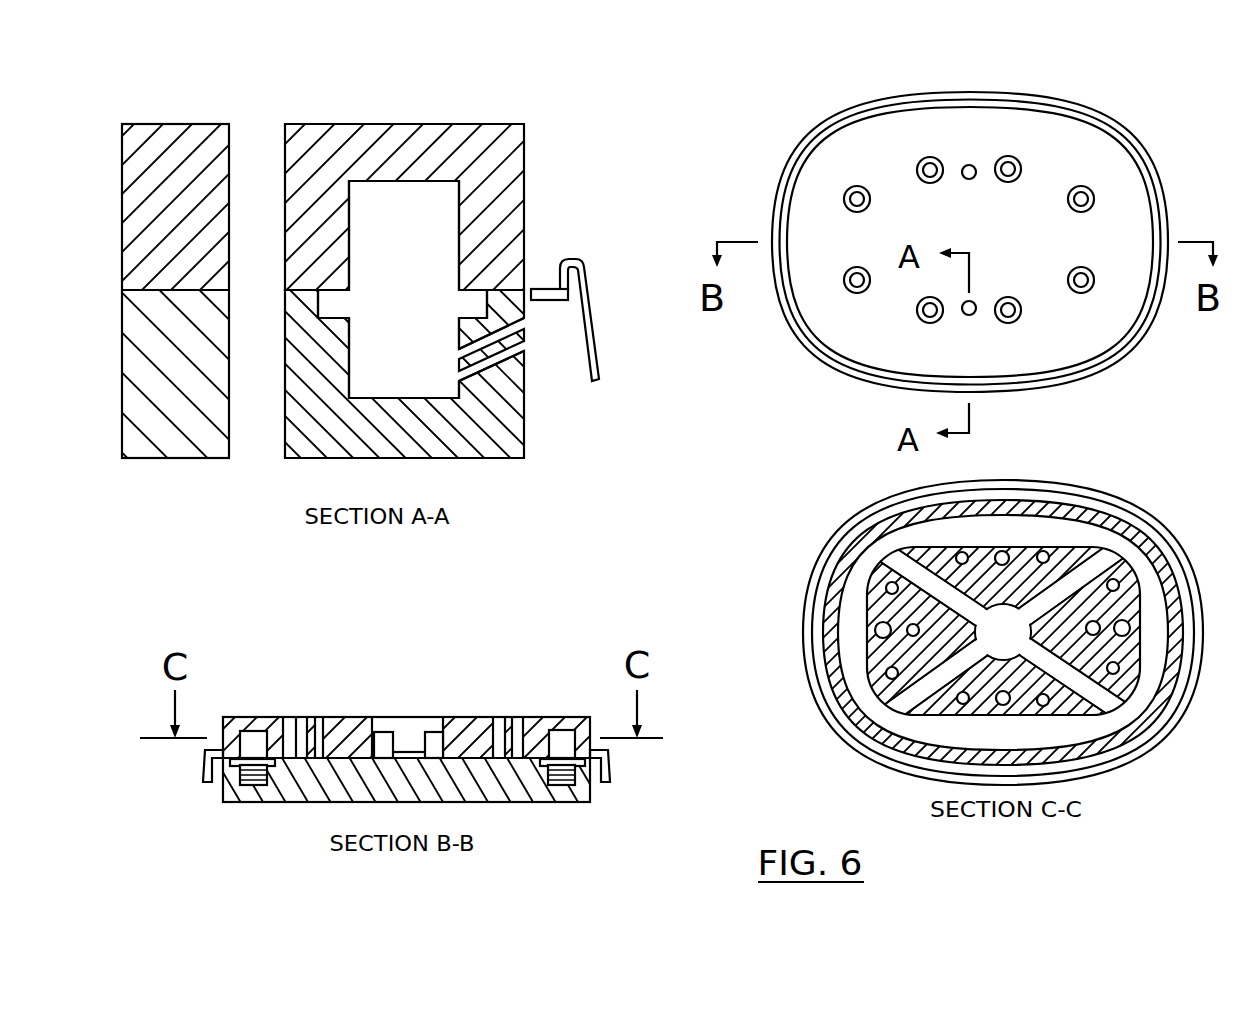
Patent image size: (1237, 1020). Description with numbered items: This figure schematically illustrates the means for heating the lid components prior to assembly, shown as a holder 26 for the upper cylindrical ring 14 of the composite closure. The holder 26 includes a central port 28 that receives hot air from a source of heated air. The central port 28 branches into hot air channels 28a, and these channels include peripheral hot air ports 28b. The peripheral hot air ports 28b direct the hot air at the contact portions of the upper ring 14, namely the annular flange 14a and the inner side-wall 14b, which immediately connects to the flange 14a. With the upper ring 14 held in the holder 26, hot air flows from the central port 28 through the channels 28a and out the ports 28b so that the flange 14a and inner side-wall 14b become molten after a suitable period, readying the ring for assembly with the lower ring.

The upper cylindrical ring 14 is at (688, 767).
The flange 14a is at (545, 288).
The inner side-wall 14b is at (574, 259).
The holder 26 is at (374, 137).
The central port 28 is at (258, 125).
The hot air channels 28a is at (391, 279).
The peripheral hot air ports 28b is at (524, 323).